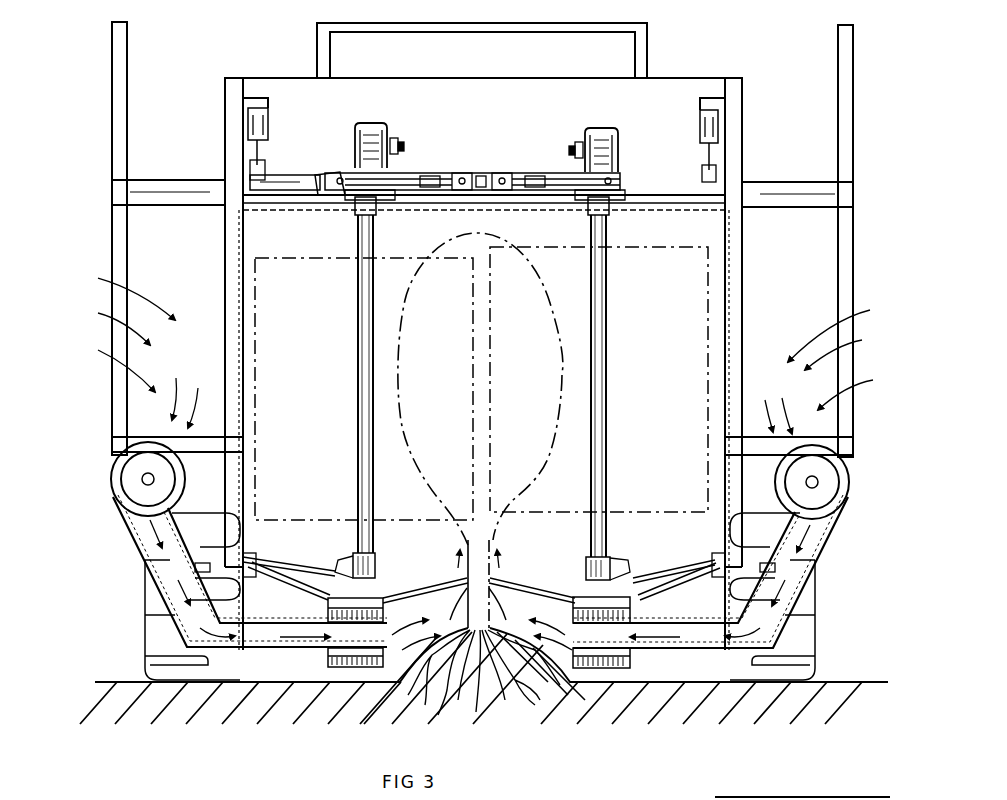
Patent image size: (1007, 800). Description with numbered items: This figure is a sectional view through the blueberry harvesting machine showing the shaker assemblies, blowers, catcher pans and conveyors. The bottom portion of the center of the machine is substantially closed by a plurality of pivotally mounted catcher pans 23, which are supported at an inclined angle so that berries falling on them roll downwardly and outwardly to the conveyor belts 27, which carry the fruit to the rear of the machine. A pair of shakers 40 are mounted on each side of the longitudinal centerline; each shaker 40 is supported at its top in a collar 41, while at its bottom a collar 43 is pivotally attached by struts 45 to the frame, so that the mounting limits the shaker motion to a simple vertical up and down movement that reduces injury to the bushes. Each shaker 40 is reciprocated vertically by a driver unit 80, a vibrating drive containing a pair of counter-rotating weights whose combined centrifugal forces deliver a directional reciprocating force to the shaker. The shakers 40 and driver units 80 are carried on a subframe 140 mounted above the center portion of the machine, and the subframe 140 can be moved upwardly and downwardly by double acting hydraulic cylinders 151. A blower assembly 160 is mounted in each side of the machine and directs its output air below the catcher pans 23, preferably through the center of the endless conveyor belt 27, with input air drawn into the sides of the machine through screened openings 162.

The catcher pans 23 is at (430, 590).
The conveyor belts 27 is at (328, 607).
The shaker 40 is at (310, 349).
The collar 41 is at (352, 208).
The collar 43 is at (378, 568).
The struts 45 is at (312, 566).
The driver unit 80 is at (374, 125).
The subframe 140 is at (293, 178).
The double acting hydraulic cylinders 151 is at (268, 122).
The blower assembly 160 is at (125, 488).
The screened openings 162 is at (142, 248).